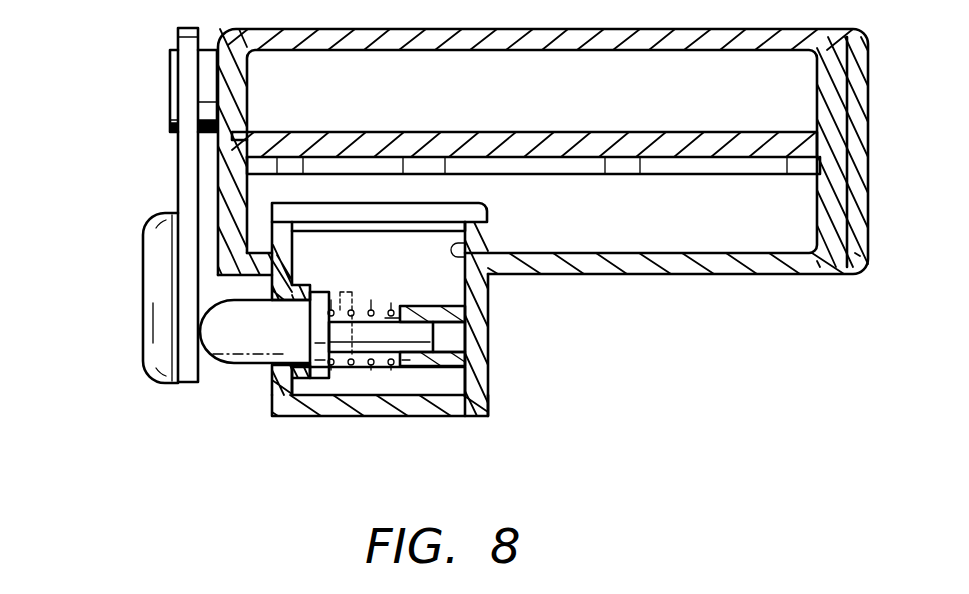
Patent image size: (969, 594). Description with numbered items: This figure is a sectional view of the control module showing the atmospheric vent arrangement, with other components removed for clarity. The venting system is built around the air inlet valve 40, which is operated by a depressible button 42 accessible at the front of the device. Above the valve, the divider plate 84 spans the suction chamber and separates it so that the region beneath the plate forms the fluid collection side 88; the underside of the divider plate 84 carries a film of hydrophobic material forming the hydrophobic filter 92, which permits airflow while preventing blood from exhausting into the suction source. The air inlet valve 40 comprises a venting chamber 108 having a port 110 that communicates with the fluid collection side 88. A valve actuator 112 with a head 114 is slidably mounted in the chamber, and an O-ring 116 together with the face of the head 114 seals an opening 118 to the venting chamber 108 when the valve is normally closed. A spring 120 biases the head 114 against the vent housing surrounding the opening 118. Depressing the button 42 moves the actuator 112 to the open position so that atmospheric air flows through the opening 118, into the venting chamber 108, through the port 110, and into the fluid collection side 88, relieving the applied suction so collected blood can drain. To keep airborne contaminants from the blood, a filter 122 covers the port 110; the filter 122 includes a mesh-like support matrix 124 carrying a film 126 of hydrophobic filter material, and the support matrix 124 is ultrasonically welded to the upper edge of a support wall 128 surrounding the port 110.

The air inlet valve 40 is at (493, 380).
The depressible button 42 is at (147, 250).
The divider plate 84 is at (630, 132).
The fluid collection side 88 is at (783, 233).
The hydrophobic filter 92 is at (610, 174).
The venting chamber 108 is at (423, 380).
The port 110 is at (488, 250).
The valve actuator 112 is at (208, 383).
The head 114 is at (352, 368).
The O-ring 116 is at (293, 395).
The opening 118 is at (287, 353).
The spring 120 is at (392, 308).
The filter 122 is at (397, 202).
The mesh-like support matrix 124 is at (309, 218).
The film of hydrophobic filter material 126 is at (330, 232).
The support wall 128 is at (480, 226).